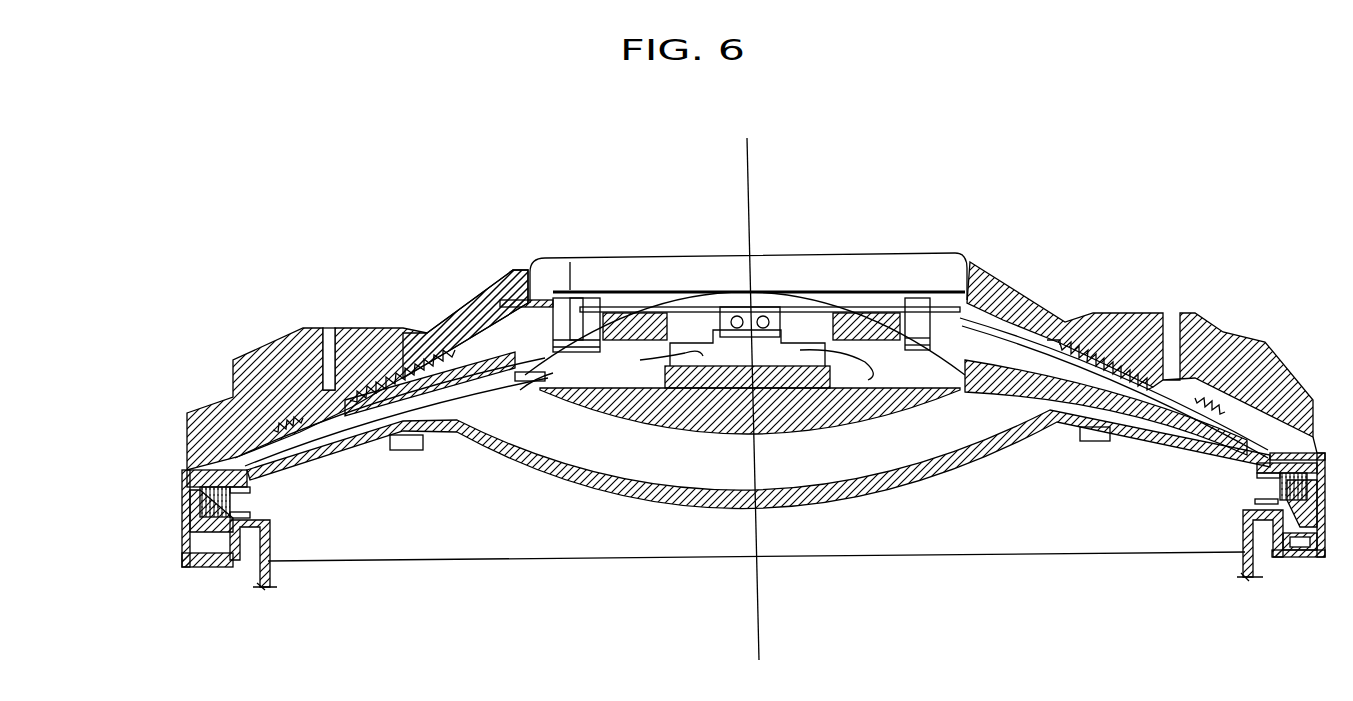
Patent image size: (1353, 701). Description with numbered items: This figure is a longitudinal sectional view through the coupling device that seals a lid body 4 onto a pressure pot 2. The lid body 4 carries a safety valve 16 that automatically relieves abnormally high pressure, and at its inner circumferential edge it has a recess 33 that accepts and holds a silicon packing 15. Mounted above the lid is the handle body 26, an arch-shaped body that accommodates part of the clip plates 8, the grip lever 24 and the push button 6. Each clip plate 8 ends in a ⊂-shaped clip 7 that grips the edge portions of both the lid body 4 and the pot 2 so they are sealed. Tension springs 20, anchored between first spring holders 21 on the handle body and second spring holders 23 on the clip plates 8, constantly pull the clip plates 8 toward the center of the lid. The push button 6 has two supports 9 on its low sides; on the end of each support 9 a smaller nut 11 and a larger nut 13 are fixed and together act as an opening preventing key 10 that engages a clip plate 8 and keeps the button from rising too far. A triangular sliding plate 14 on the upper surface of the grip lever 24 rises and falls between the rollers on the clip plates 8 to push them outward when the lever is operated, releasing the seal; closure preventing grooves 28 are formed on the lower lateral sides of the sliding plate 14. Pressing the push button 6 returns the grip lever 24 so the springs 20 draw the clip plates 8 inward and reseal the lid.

The pressure pot 2 is at (263, 543).
The lid body 4 is at (723, 507).
The push button 6 is at (635, 262).
The ⊂-shaped clip 7 is at (1303, 557).
The clip plate 8 is at (237, 570).
The support 9 is at (567, 297).
The opening preventing key 10 is at (543, 378).
The nut having a smaller diameter 11 is at (553, 300).
The nut having a larger diameter 13 is at (572, 340).
The triangular sliding plate 14 is at (835, 365).
The silicon packing 15 is at (233, 493).
The safety valve 16 is at (323, 340).
The tension spring 20 is at (420, 343).
The first spring holder 21 is at (447, 347).
The second spring holder 23 is at (277, 432).
The grip lever 24 is at (600, 347).
The handle body 26 is at (262, 357).
The closure preventing groove 28 is at (743, 359).
The recess 33 is at (190, 512).